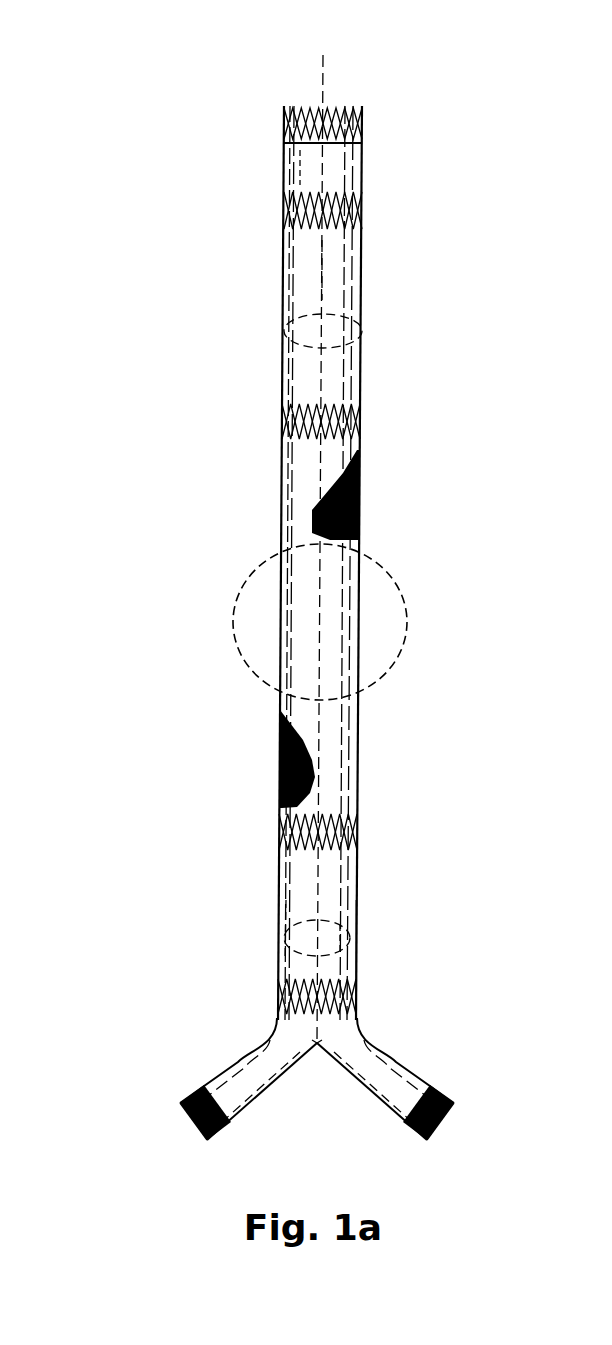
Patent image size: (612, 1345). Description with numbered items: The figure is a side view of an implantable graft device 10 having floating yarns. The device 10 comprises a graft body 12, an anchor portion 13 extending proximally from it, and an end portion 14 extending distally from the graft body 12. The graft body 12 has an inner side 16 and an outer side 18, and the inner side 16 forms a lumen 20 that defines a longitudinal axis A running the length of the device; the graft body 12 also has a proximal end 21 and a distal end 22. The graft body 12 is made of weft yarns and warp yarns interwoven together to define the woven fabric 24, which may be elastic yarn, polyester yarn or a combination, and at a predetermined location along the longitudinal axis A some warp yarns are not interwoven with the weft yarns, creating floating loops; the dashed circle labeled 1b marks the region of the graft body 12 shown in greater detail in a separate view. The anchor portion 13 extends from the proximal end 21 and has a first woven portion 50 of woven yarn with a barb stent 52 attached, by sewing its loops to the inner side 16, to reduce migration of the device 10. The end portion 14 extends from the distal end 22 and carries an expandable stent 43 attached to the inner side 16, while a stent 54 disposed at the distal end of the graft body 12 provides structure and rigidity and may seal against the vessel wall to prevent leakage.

The implantable graft device 10 is at (150, 66).
The longitudinal axis A is at (327, 77).
The graft body 12 is at (274, 479).
The anchor portion 13 is at (308, 173).
The end portion 14 is at (292, 1053).
The inner side 16 is at (330, 340).
The outer side 18 is at (288, 923).
The lumen 20 is at (328, 940).
The proximal end 21 is at (283, 133).
The distal end 22 is at (278, 987).
The woven fabric 24 is at (322, 280).
The expandable stent 43 is at (230, 1130).
The first woven portion 50 is at (337, 173).
The barb stent 52 is at (350, 107).
The stent 54 is at (372, 940).
The detail view reference 1b is at (263, 563).